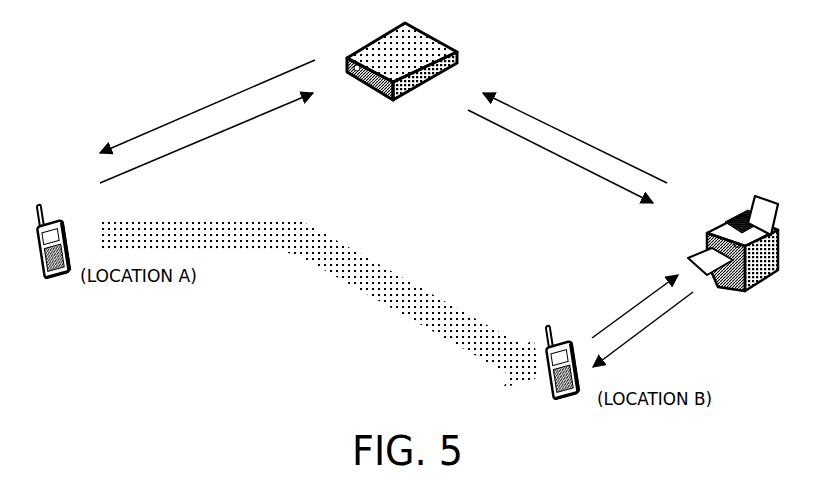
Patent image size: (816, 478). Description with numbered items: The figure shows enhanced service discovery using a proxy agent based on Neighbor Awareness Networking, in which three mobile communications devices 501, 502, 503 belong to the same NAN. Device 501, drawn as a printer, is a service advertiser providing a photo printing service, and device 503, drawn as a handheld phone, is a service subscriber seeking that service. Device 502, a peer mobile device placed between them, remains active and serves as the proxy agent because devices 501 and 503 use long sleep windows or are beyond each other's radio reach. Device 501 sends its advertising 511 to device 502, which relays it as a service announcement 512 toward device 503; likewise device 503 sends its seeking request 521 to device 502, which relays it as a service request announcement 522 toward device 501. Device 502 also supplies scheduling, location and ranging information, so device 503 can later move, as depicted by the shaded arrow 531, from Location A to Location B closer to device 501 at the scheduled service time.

The mobile communications device (service advertiser) 501 is at (745, 293).
The mobile communications device (proxy agent) 502 is at (402, 103).
The mobile communications device (service subscriber) 503 is at (62, 275).
The service advertisement (advertising) 511 is at (593, 148).
The service announcement 512 is at (183, 117).
The service subscription request (seeking) 521 is at (278, 107).
The service request announcement 522 is at (525, 137).
The movement of device from Location A to Location B 531 is at (285, 250).